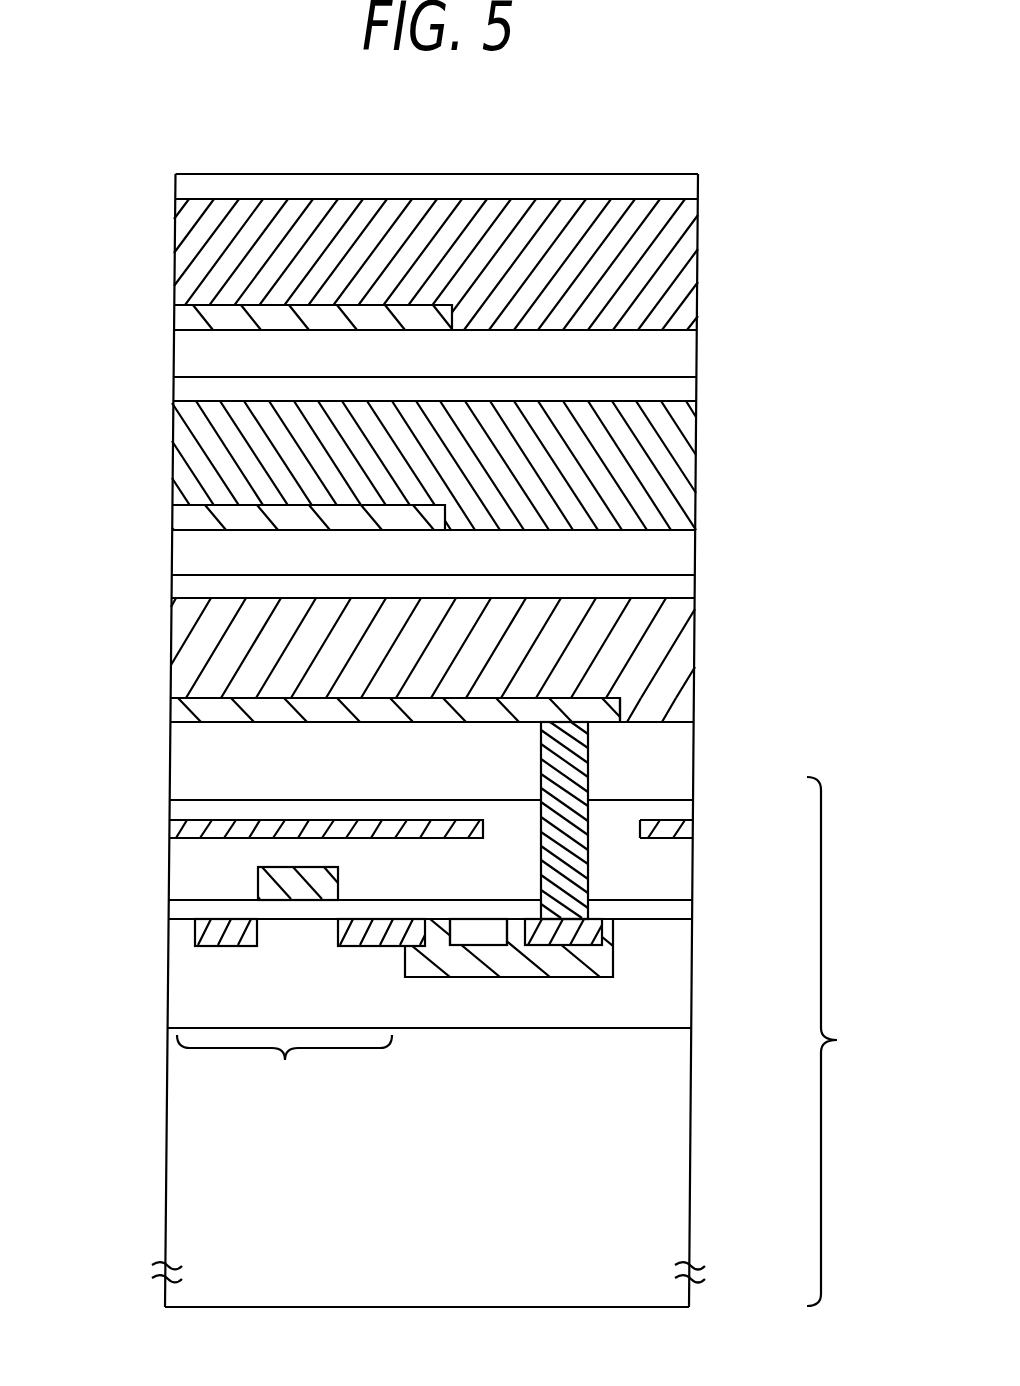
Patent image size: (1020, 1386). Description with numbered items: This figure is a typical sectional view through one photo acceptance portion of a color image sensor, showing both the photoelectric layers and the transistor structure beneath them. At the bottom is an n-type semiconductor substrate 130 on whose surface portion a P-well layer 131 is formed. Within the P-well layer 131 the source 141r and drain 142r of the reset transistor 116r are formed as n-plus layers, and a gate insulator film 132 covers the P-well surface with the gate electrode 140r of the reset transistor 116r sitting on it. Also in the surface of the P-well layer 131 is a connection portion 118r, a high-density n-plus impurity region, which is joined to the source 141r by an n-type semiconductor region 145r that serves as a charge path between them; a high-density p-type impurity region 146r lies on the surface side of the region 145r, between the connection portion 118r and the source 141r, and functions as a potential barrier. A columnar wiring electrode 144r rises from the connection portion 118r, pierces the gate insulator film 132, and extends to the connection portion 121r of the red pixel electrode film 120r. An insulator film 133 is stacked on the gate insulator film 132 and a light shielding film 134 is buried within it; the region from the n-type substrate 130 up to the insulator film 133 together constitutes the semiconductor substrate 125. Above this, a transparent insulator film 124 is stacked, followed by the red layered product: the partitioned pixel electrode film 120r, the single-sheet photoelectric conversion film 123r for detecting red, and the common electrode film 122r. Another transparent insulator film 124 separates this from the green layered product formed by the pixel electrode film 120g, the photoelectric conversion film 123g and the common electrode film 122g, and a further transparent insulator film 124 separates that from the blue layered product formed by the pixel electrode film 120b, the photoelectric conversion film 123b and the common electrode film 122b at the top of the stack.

The reset transistor 116r is at (284, 1070).
The connection portion 118r is at (617, 932).
The pixel electrode film 120b is at (184, 320).
The pixel electrode film 120g is at (182, 522).
The pixel electrode film 120r is at (178, 708).
The connection portion 121r is at (620, 710).
The common electrode film 122b is at (700, 184).
The common electrode film 122g is at (690, 386).
The common electrode film 122r is at (685, 582).
The photoelectric conversion film 123b is at (690, 248).
The photoelectric conversion film 123g is at (690, 459).
The photoelectric conversion film 123r is at (670, 645).
The transparent insulator film 124 is at (685, 343).
The semiconductor substrate 125 is at (856, 1041).
The n-type semiconductor substrate 130 is at (667, 1160).
The P-well layer 131 is at (667, 993).
The gate insulator film 132 is at (683, 907).
The insulator film 133 is at (675, 860).
The light shielding film 134 is at (680, 823).
The gate electrode 140r is at (327, 885).
The source 141r is at (353, 946).
The drain 142r is at (218, 946).
The columnar wiring electrode 144r is at (552, 772).
The n-type semiconductor region 145r is at (517, 930).
The high-density p-type impurity region 146r is at (470, 938).